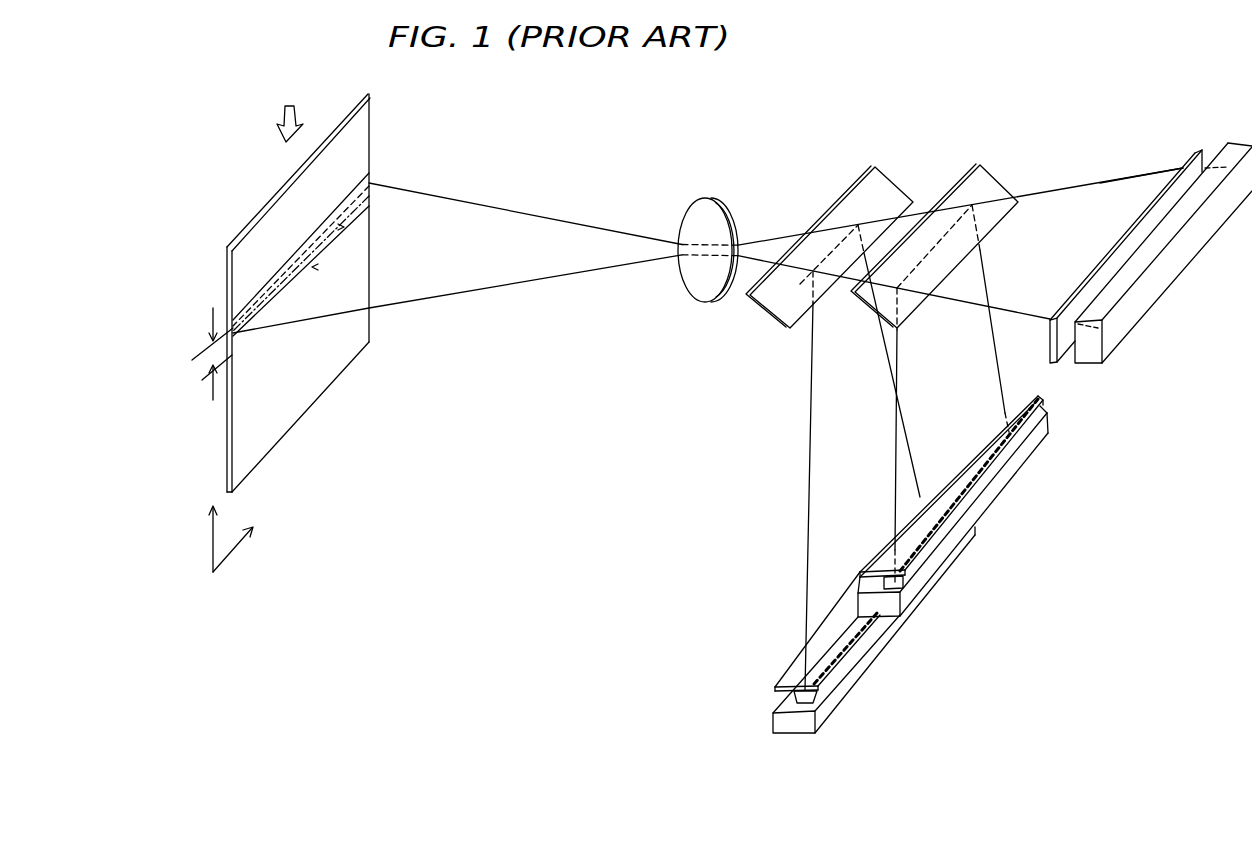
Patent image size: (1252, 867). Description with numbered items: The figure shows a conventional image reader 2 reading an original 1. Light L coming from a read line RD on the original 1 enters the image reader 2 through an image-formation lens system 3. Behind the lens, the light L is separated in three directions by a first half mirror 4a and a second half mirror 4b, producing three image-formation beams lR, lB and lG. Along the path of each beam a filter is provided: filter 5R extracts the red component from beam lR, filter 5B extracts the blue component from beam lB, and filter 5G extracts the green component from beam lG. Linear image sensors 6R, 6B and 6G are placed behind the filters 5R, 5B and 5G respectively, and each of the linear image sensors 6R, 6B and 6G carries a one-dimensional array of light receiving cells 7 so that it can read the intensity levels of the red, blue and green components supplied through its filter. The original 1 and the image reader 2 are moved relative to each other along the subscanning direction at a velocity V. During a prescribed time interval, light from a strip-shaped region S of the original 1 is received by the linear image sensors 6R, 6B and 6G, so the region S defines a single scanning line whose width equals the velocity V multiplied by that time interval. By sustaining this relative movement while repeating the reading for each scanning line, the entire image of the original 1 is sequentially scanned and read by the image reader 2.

The original 1 is at (370, 117).
The image reader 2 is at (1010, 66).
The image-formation lens system 3 is at (703, 198).
The first half mirror 4a is at (897, 185).
The second half mirror 4b is at (988, 175).
The filter 5R is at (843, 618).
The filter 5G is at (1117, 240).
The filter 5B is at (980, 432).
The linear image sensor 6R is at (862, 677).
The linear image sensor 6G is at (1172, 274).
The linear image sensor 6B is at (1020, 470).
The light receiving cells 7 is at (785, 687).
The light L is at (504, 207).
The strip-shaped region S is at (318, 266).
The read line RD is at (345, 228).
The velocity V is at (290, 110).
The image-formation beam lR is at (809, 441).
The image-formation beam lG is at (1101, 183).
The image-formation beam lB is at (1006, 373).